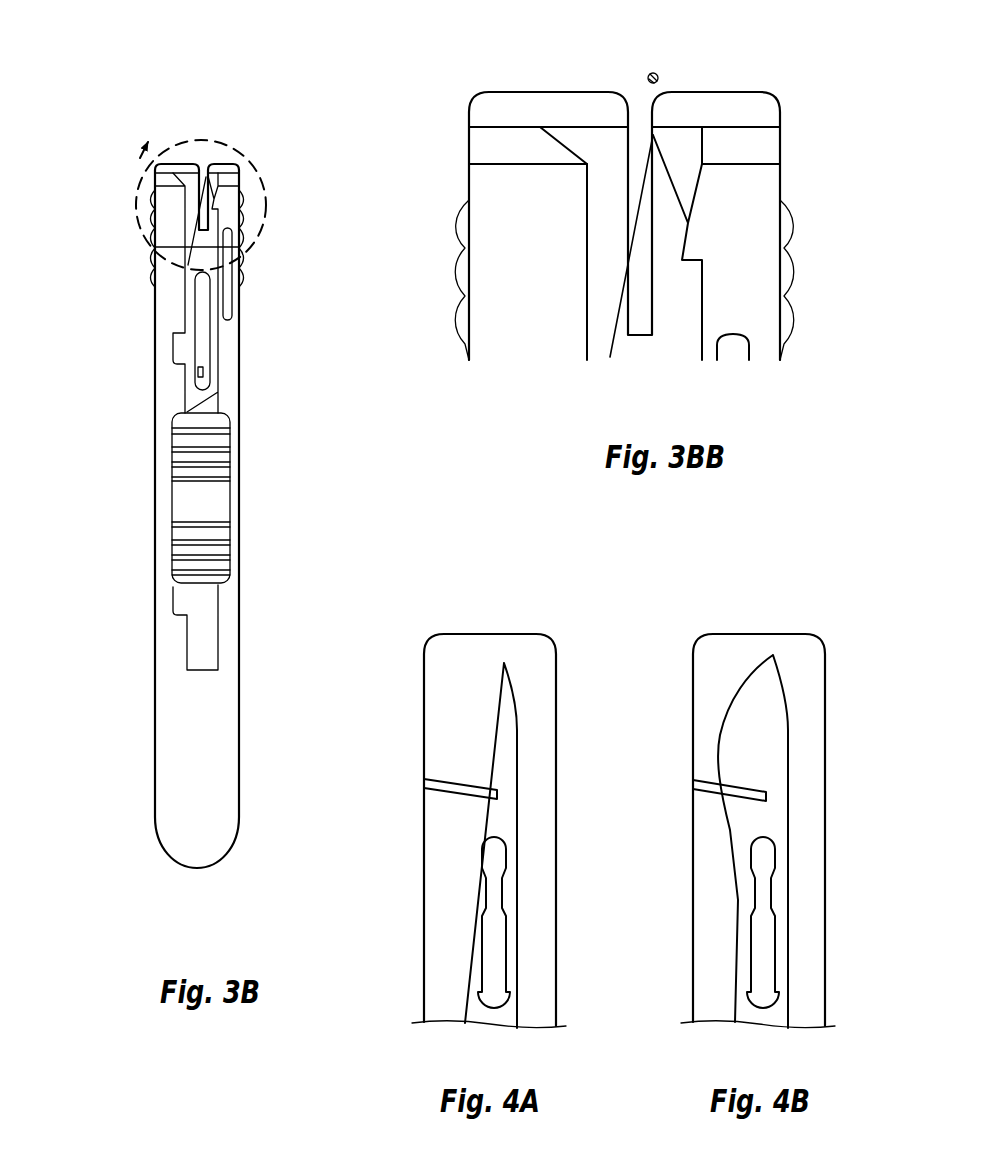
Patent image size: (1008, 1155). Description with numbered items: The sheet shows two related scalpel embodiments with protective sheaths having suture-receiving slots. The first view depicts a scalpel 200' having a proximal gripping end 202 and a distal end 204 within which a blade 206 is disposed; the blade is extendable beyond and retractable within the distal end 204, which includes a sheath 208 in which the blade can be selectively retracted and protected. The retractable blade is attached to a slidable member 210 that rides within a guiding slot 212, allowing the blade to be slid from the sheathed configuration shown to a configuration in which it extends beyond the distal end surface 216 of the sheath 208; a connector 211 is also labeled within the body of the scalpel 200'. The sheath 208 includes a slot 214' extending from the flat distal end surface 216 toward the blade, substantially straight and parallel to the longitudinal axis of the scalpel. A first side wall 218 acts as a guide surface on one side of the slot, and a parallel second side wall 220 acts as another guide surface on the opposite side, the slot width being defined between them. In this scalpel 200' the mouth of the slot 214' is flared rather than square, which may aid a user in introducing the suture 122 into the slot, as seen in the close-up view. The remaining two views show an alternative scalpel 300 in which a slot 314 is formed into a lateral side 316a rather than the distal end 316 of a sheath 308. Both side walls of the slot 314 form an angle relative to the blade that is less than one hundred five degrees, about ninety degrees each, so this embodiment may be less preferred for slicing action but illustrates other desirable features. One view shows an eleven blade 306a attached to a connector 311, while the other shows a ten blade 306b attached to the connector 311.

In FIG. 3B, the scalpel 200' is at (63, 324).
In FIG. 3B, the proximal gripping end 202 is at (157, 751).
In FIG. 3B, the distal end 204 is at (122, 170).
In FIG. 3B, the blade 206 is at (210, 260).
In FIG. 3BB, the blade 206 is at (698, 332).
In FIG. 3B, the sheath 208 is at (232, 190).
In FIG. 3BB, the sheath 208 is at (765, 178).
In FIG. 3B, the slidable member 210 is at (217, 437).
In FIG. 3B, the connector 211 is at (203, 328).
In FIG. 3B, the guiding slot 212 is at (209, 364).
In FIG. 3B, the slot 214' is at (241, 187).
In FIG. 3BB, the slot 214' is at (595, 195).
In FIG. 3B, the distal end surface 216 is at (222, 162).
In FIG. 3BB, the distal end surface 216 is at (664, 102).
In FIG. 3BB, the first side wall 218 is at (653, 122).
In FIG. 3BB, the second side wall 220 is at (627, 118).
In FIG. 3BB, the suture 122 is at (651, 70).
In FIG. 4A, the scalpel 300 is at (556, 622).
In FIG. 4B, the scalpel 300 is at (824, 622).
In FIG. 4A, the blade 306a is at (510, 773).
In FIG. 4B, the blade 306b is at (776, 771).
In FIG. 4A, the sheath 308 is at (452, 657).
In FIG. 4B, the sheath 308 is at (720, 657).
In FIG. 4A, the connector 311 is at (497, 955).
In FIG. 4B, the connector 311 is at (766, 964).
In FIG. 4A, the slot 314 is at (422, 782).
In FIG. 4B, the slot 314 is at (692, 782).
In FIG. 4A, the distal end 316 is at (488, 638).
In FIG. 4B, the distal end 316 is at (756, 638).
In FIG. 4A, the lateral side 316a is at (424, 706).
In FIG. 4B, the lateral side 316a is at (693, 706).